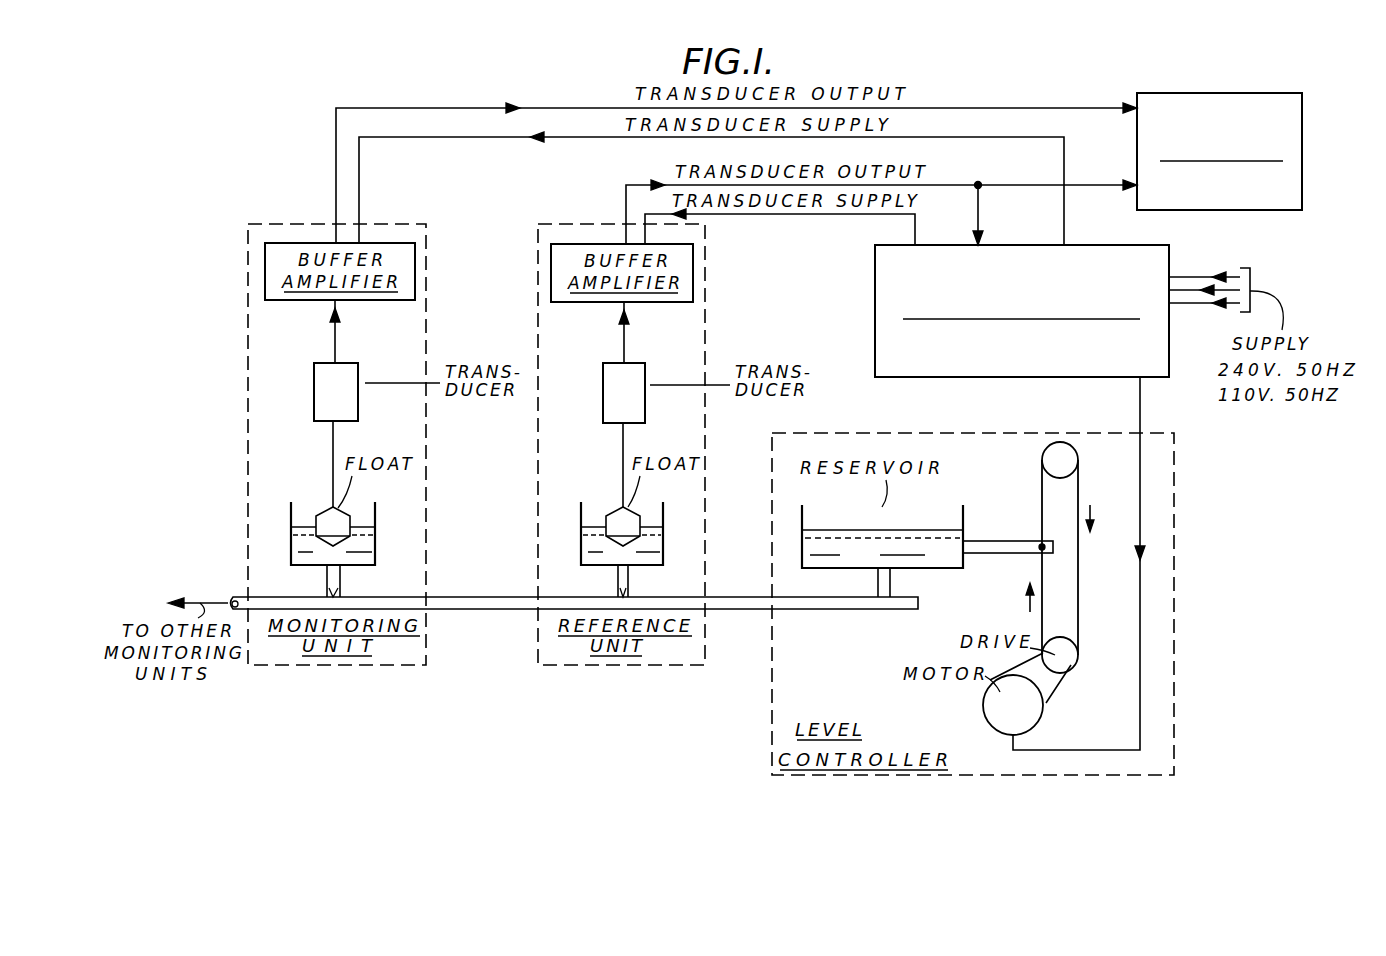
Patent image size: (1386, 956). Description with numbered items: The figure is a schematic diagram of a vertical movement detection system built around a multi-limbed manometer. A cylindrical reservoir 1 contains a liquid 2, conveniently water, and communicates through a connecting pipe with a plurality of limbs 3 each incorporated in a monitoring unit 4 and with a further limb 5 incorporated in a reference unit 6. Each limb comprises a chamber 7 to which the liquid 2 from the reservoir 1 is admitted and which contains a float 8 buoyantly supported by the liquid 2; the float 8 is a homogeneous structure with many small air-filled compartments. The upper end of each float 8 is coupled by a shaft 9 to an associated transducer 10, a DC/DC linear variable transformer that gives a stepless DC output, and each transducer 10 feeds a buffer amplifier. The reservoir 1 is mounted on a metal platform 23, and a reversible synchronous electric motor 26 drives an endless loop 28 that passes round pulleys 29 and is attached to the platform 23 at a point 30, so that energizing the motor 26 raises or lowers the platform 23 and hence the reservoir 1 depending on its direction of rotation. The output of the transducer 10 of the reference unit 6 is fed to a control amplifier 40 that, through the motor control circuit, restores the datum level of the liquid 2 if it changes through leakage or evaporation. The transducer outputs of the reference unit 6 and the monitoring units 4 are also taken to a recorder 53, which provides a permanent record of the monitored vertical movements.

The reservoir 1 is at (963, 520).
The liquid 2 is at (291, 512).
The limbs 3 is at (340, 587).
The monitoring unit 4 is at (426, 592).
The further limb 5 is at (628, 587).
The reference unit 6 is at (705, 592).
The chamber 7 is at (375, 520).
The float 8 is at (322, 510).
The shaft 9 is at (333, 433).
The transducer 10 is at (358, 373).
The metal platform 23 is at (1003, 555).
The electric motor 26 is at (990, 706).
The endless loop 28 is at (1078, 620).
The pulleys 29 is at (1070, 452).
The point 30 is at (1040, 546).
The amplifier 40 is at (875, 315).
The recorder 53 is at (1197, 98).